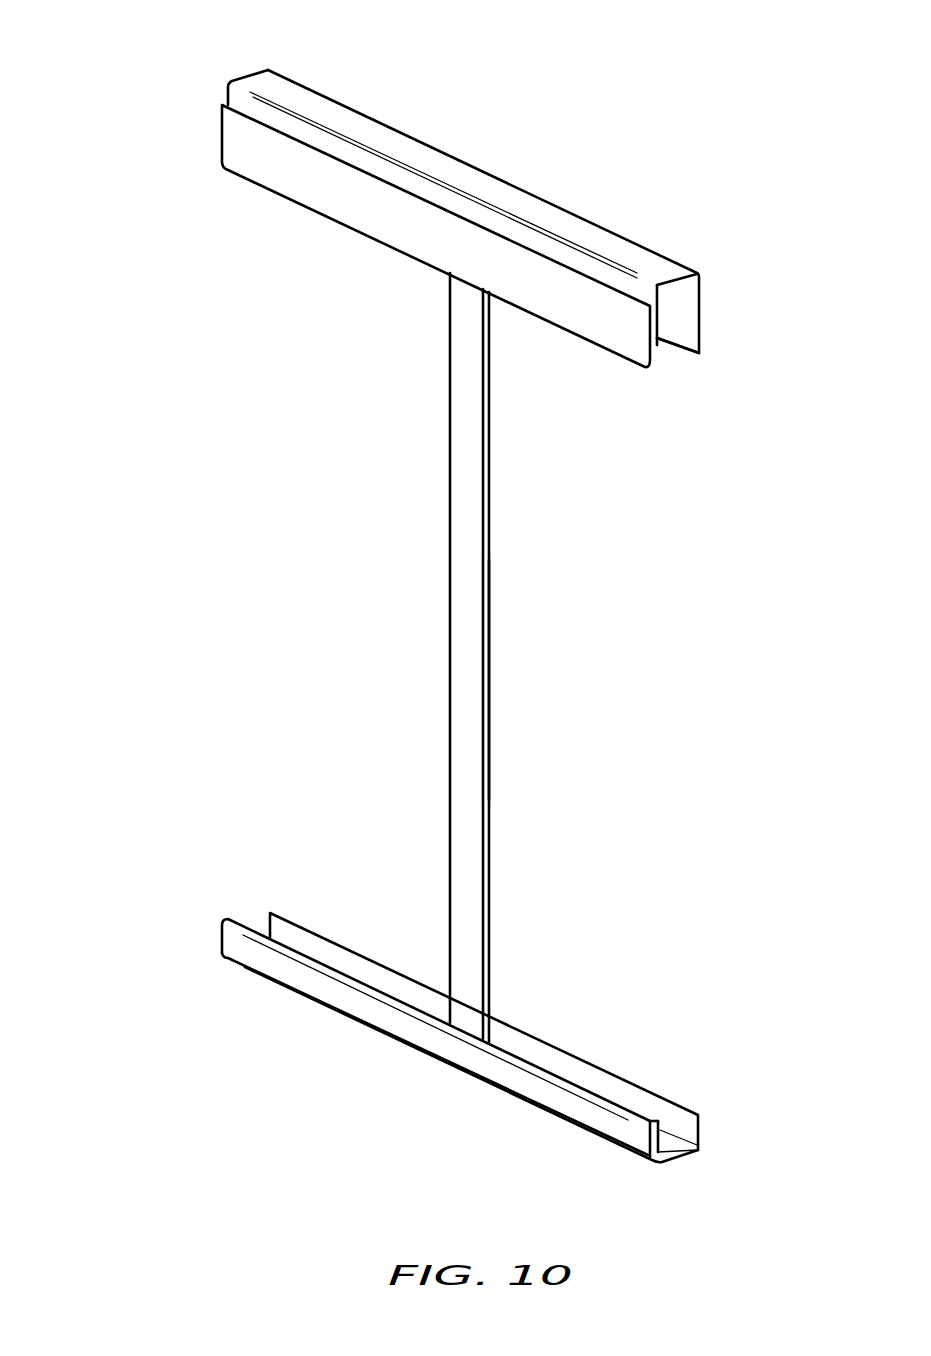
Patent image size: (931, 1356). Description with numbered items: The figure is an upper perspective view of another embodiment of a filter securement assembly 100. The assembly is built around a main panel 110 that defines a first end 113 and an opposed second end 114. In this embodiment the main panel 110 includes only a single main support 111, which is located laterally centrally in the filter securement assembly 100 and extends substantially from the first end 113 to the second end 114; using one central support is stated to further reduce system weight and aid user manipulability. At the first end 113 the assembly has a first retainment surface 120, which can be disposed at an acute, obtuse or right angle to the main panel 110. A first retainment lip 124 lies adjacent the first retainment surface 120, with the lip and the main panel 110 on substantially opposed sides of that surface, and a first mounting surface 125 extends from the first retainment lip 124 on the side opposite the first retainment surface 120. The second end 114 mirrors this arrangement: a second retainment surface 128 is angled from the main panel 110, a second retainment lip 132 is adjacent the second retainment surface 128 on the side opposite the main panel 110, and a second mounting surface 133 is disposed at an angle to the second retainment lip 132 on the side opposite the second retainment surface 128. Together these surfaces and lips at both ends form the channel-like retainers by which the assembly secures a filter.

The filter securement assembly 100 is at (133, 97).
The main panel 110 is at (490, 545).
The main support 111 is at (490, 681).
The first end 113 is at (515, 221).
The second end 114 is at (515, 1081).
The first retainment surface 120 is at (675, 282).
The first retainment lip 124 is at (657, 348).
The first mounting surface 125 is at (588, 307).
The second retainment surface 128 is at (678, 1160).
The second retainment lip 132 is at (657, 1148).
The second mounting surface 133 is at (618, 1125).